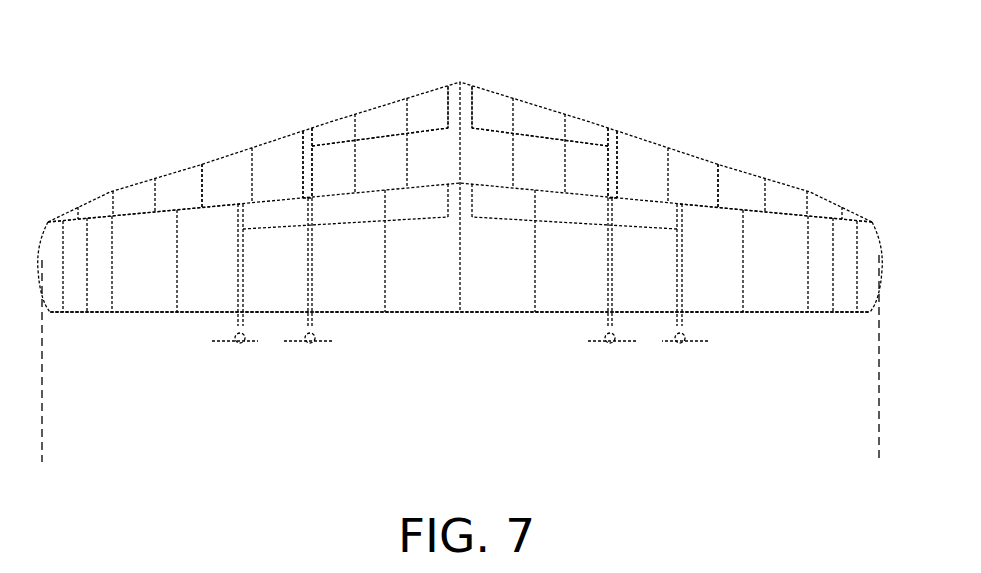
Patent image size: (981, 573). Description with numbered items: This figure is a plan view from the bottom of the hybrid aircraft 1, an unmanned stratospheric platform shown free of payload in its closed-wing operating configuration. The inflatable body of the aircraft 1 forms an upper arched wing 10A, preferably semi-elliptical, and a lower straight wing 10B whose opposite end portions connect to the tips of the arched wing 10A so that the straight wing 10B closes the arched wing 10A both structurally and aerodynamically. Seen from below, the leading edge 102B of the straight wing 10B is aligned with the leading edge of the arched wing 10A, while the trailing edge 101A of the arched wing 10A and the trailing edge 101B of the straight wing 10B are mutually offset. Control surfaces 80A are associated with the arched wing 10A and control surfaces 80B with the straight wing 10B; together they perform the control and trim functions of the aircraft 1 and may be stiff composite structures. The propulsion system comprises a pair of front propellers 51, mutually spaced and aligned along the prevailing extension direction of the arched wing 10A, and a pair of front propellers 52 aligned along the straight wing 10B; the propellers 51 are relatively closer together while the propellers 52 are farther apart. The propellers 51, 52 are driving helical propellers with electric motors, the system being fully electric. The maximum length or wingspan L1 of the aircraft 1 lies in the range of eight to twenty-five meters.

The hybrid aircraft 1 is at (406, 66).
The arched wing 10A is at (752, 160).
The straight wing 10B is at (416, 320).
The control surfaces 80A is at (368, 132).
The control surfaces 80B is at (293, 217).
The trailing edge 101A is at (202, 160).
The trailing edge 101B is at (187, 213).
The leading edge 102B is at (548, 315).
The front propellers 51 is at (301, 352).
The front propellers 52 is at (214, 351).
The maximum length L1 is at (52, 455).